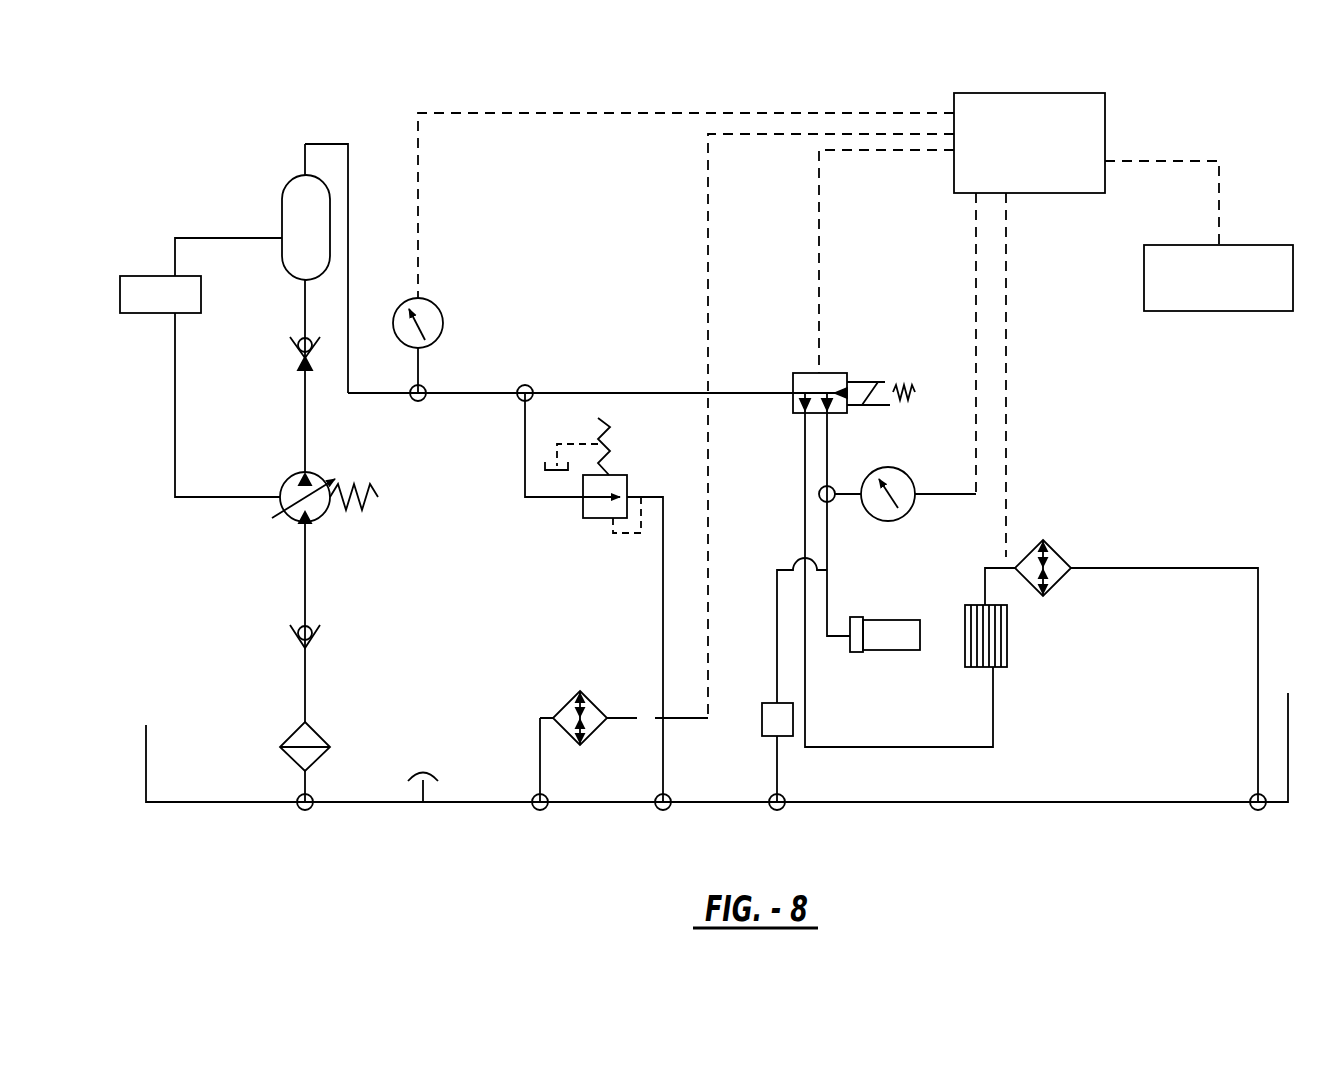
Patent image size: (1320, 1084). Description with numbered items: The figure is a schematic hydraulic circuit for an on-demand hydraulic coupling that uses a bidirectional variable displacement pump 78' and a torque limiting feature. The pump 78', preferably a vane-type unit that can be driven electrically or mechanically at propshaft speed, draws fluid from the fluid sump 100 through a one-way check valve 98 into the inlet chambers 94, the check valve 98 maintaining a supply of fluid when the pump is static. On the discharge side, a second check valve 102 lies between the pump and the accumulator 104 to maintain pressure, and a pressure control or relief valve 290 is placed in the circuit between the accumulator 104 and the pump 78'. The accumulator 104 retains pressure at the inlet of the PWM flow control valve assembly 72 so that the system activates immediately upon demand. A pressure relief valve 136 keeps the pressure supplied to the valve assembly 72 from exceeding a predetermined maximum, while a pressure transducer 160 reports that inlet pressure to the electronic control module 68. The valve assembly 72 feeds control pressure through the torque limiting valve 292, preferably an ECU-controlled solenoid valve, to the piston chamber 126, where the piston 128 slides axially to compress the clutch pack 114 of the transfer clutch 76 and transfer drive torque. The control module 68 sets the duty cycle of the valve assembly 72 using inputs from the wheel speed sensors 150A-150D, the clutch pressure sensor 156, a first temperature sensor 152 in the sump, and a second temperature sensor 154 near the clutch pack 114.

The electronic traction control module 68 is at (1110, 129).
The wheel speed sensors 150A-150D is at (1153, 288).
The fluid sump 100 is at (210, 791).
The accumulator 104 is at (297, 190).
The pressure control or relief valve 290 is at (143, 300).
The check valves 102 is at (297, 343).
The variable displacement pump 78' is at (328, 530).
The check valves 98 is at (298, 628).
The inlet chambers 94 is at (625, 360).
The second pressure transducer 160 is at (434, 321).
The pressure relief valve 136 is at (577, 513).
The first temperature sensor 152 is at (595, 708).
The torque limiting valve 292 is at (767, 727).
The PWM flow control valve assembly 72 is at (797, 364).
The clutch pressure sensor 156 is at (900, 481).
The piston chamber 126 is at (857, 630).
The piston 128 is at (891, 635).
The transfer clutch 76 is at (1040, 656).
The clutch pack 114 is at (1000, 663).
The second temperature sensor 154 is at (1052, 560).